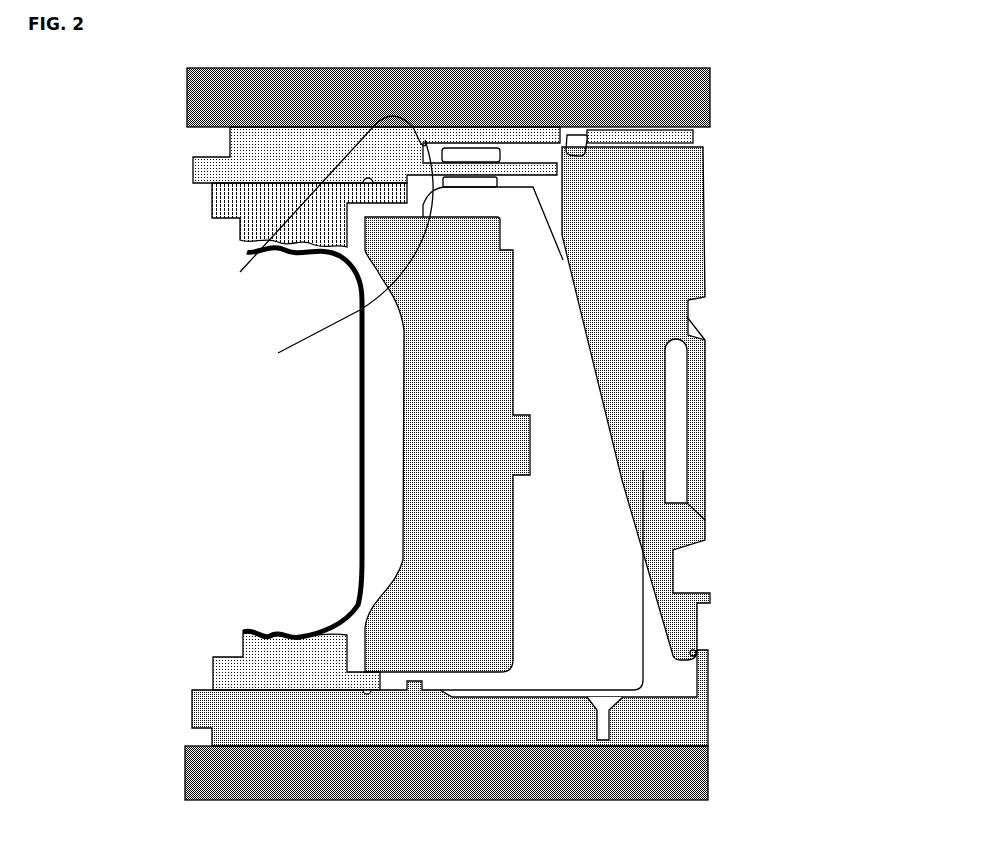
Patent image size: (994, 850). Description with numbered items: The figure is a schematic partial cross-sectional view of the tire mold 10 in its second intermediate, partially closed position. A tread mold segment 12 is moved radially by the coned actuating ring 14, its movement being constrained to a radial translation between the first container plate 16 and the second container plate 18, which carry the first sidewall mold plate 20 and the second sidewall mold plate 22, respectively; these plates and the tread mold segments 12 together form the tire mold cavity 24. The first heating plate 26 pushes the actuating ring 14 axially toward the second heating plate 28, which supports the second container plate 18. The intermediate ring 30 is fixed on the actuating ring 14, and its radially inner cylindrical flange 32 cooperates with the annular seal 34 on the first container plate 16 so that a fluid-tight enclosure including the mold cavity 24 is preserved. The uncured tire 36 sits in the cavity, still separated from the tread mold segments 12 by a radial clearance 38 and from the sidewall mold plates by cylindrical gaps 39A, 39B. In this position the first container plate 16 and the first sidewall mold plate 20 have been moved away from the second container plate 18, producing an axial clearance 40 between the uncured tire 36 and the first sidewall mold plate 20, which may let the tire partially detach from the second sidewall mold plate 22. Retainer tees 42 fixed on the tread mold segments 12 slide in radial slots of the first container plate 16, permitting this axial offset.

The tire mold 10 is at (830, 222).
The tread mold segments 12 is at (412, 292).
The coned actuating ring 14 is at (683, 298).
The first container plate 16 is at (193, 183).
The second container plate 18 is at (190, 722).
The first sidewall mold plate 20 is at (225, 222).
The second sidewall mold plate 22 is at (210, 672).
The tire mold cavity 24 is at (330, 444).
The first heating plate 26 is at (187, 120).
The second heating plate 28 is at (185, 777).
The intermediate ring 30 is at (695, 135).
The cylindrical flange 32 is at (337, 258).
The annular seal 34 is at (315, 206).
The uncured tire 36 is at (360, 478).
The radial clearance 38 is at (402, 449).
The cylindrical gap 39A is at (352, 260).
The cylindrical gap 39B is at (354, 620).
The axial clearance 40 is at (238, 250).
The retainer tees 42 is at (500, 152).